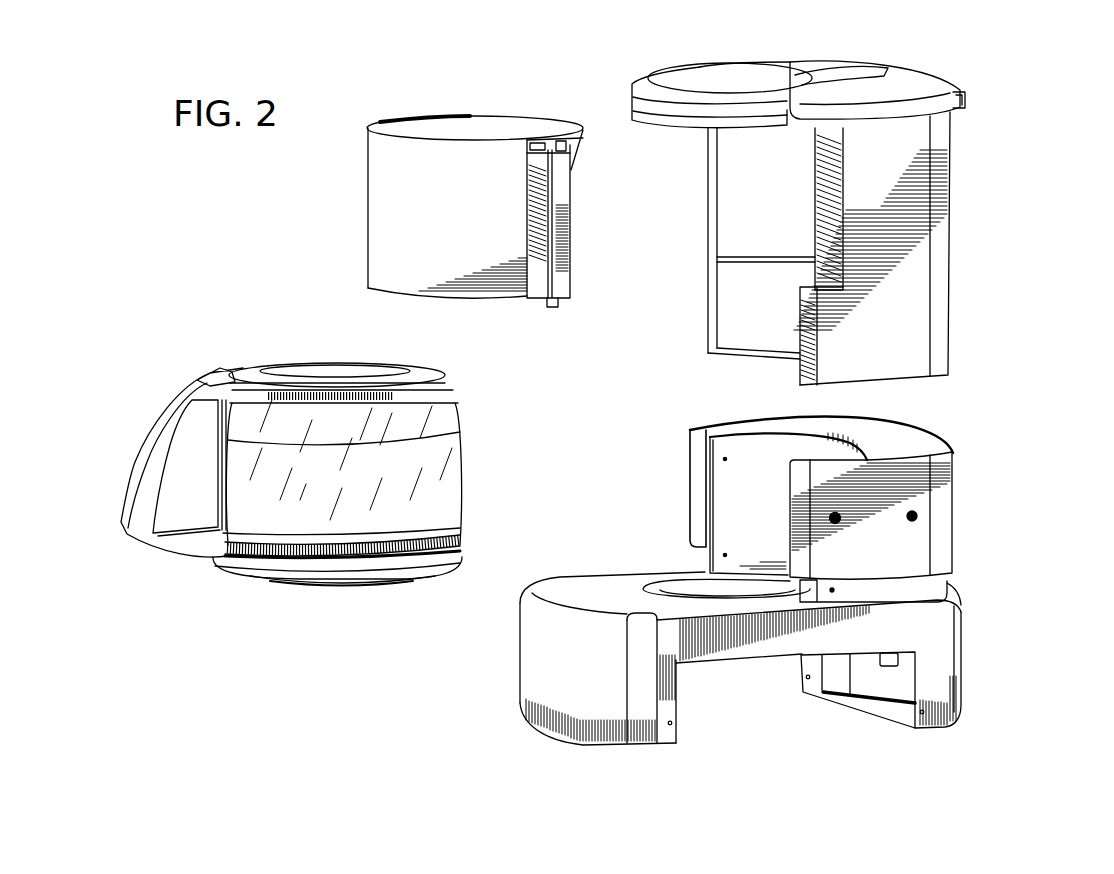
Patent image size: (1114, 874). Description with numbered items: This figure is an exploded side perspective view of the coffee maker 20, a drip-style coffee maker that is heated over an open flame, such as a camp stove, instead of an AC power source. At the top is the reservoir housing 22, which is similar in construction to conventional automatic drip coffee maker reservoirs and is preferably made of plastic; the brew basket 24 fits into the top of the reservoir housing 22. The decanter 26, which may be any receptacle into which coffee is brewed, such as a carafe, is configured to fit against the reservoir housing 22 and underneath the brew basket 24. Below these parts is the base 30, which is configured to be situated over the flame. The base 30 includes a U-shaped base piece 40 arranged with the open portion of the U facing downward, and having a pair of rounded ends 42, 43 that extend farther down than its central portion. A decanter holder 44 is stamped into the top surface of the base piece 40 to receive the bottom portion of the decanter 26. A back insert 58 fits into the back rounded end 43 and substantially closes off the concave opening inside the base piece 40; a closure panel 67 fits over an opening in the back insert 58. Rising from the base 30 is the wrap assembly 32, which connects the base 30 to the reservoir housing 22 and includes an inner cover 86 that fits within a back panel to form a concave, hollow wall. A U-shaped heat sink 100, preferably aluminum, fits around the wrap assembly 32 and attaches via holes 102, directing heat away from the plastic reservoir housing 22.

The coffee maker 20 is at (247, 266).
The reservoir housing 22 is at (907, 285).
The brew basket 24 is at (487, 132).
The decanter 26 is at (462, 485).
The base 30 is at (988, 664).
The wrap assembly 32 is at (600, 465).
The U-shaped base piece 40 is at (889, 647).
The rounded end 42 is at (560, 735).
The back rounded end 43 is at (952, 727).
The decanter holder 44 is at (700, 593).
The back insert 58 is at (817, 697).
The closure panel 67 is at (890, 664).
The inner cover 86 is at (757, 506).
The heat sink 100 is at (937, 500).
The holes 102 is at (914, 520).